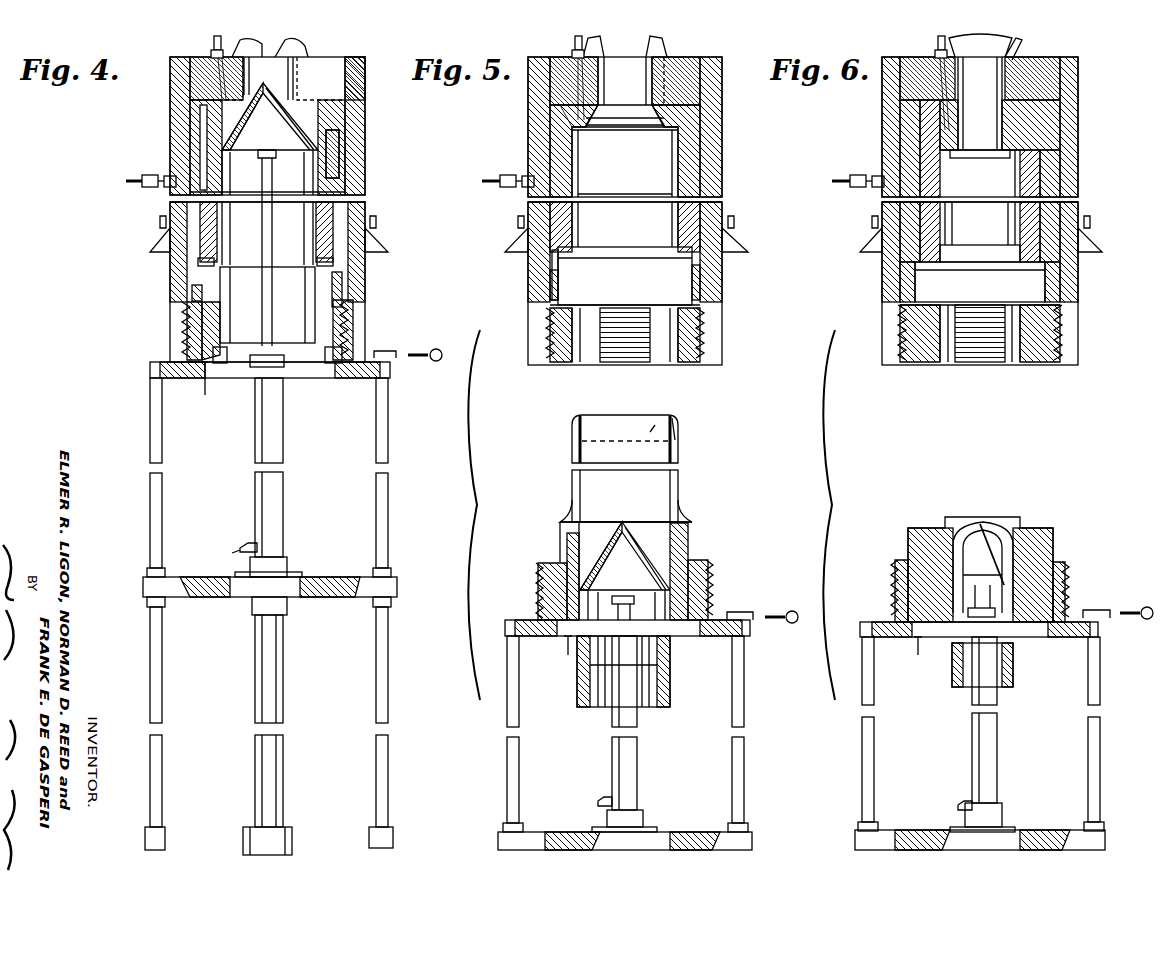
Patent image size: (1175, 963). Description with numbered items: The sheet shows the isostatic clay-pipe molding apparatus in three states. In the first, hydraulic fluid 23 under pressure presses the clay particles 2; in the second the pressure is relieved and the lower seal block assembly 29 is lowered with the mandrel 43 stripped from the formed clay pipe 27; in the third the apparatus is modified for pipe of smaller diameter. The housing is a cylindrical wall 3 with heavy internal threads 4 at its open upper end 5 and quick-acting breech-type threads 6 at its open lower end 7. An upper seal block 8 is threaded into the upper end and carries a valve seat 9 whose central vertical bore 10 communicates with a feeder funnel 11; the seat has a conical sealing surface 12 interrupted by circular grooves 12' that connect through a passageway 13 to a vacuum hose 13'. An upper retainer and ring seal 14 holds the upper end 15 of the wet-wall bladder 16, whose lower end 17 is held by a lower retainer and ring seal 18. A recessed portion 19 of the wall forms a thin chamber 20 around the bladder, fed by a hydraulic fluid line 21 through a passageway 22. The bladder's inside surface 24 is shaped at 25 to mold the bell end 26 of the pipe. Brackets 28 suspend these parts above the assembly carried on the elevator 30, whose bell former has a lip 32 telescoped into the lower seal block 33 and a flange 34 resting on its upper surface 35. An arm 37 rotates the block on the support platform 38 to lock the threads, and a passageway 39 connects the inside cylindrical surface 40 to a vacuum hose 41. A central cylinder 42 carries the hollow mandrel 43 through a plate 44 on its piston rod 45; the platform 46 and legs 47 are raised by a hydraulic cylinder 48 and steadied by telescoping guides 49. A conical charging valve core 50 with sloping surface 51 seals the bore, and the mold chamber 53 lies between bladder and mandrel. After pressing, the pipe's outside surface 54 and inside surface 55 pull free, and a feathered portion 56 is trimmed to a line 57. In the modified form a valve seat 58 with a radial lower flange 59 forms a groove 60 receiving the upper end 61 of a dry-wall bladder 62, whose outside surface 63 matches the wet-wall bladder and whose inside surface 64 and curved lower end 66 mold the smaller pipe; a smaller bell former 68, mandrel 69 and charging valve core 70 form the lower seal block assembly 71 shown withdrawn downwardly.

In FIG. 4, the clay particles 2 is at (322, 182).
In FIG. 4, the cylindrical wall 3 is at (365, 110).
In FIG. 5, the cylindrical wall 3 is at (722, 153).
In FIG. 6, the cylindrical wall 3 is at (892, 96).
In FIG. 4, the internal threads 4 is at (192, 98).
In FIG. 5, the internal threads 4 is at (550, 98).
In FIG. 6, the internal threads 4 is at (1060, 78).
In FIG. 4, the open upper end 5 is at (353, 75).
In FIG. 5, the open upper end 5 is at (700, 72).
In FIG. 6, the open upper end 5 is at (1068, 60).
In FIG. 4, the quick-acting threads 6 is at (186, 344).
In FIG. 5, the quick-acting threads 6 is at (550, 348).
In FIG. 6, the quick-acting threads 6 is at (908, 363).
In FIG. 4, the open lower end 7 is at (172, 322).
In FIG. 5, the open lower end 7 is at (722, 348).
In FIG. 6, the open lower end 7 is at (886, 349).
In FIG. 4, the upper seal block 8 is at (325, 63).
In FIG. 5, the upper seal block 8 is at (672, 62).
In FIG. 4, the valve seat 9 is at (300, 110).
In FIG. 5, the valve seat 9 is at (585, 130).
In FIG. 4, the central vertical bore 10 is at (256, 48).
In FIG. 5, the central vertical bore 10 is at (642, 58).
In FIG. 4, the feeder funnel 11 is at (298, 50).
In FIG. 5, the feeder funnel 11 is at (610, 48).
In FIG. 6, the feeder funnel 11 is at (1020, 48).
In FIG. 5, the conical sealing surface 12 is at (625, 114).
In FIG. 5, the circular grooves 12' is at (625, 148).
In FIG. 4, the passageway 13 is at (194, 68).
In FIG. 5, the passageway 13 is at (553, 78).
In FIG. 4, the vacuum hose 13' is at (205, 40).
In FIG. 5, the vacuum hose 13' is at (563, 39).
In FIG. 6, the vacuum hose 13' is at (927, 78).
In FIG. 4, the upper retainer and ring seal 14 is at (192, 113).
In FIG. 5, the upper retainer and ring seal 14 is at (700, 108).
In FIG. 6, the upper retainer and ring seal 14 is at (1060, 104).
In FIG. 4, the upper end of bladder 15 is at (345, 123).
In FIG. 5, the upper end of bladder 15 is at (552, 121).
In FIG. 5, the wet-wall bladder 16 is at (700, 180).
In FIG. 4, the lower end of bladder 17 is at (190, 290).
In FIG. 5, the lower end of bladder 17 is at (700, 284).
In FIG. 4, the lower retainer and ring seal 18 is at (340, 292).
In FIG. 5, the lower retainer and ring seal 18 is at (700, 302).
In FIG. 6, the lower retainer and ring seal 18 is at (1062, 300).
In FIG. 5, the recessed portion 19 is at (700, 136).
In FIG. 6, the recessed portion 19 is at (902, 260).
In FIG. 5, the cylindrical chamber 20 is at (552, 144).
In FIG. 6, the cylindrical chamber 20 is at (1060, 214).
In FIG. 4, the hydraulic fluid line 21 is at (134, 178).
In FIG. 5, the hydraulic fluid line 21 is at (494, 178).
In FIG. 6, the hydraulic fluid line 21 is at (836, 184).
In FIG. 4, the passageway 22 is at (176, 190).
In FIG. 5, the passageway 22 is at (538, 190).
In FIG. 6, the passageway 22 is at (892, 190).
In FIG. 4, the hydraulic fluid 23 is at (340, 160).
In FIG. 5, the inside surface of bladder 24 is at (680, 222).
In FIG. 5, the bell molding portion 25 is at (552, 266).
In FIG. 5, the bell end 26 is at (690, 517).
In FIG. 5, the clay pipe 27 is at (680, 482).
In FIG. 4, the brackets 28 is at (388, 245).
In FIG. 5, the brackets 28 is at (744, 246).
In FIG. 6, the brackets 28 is at (1100, 246).
In FIG. 4, the lower seal block assembly 29 is at (345, 348).
In FIG. 5, the lower seal block assembly 29 is at (540, 580).
In FIG. 4, the elevator 30 is at (388, 496).
In FIG. 5, the elevator 30 is at (744, 758).
In FIG. 6, the elevator 30 is at (1100, 746).
In FIG. 5, the axially directed lip 32 is at (706, 567).
In FIG. 4, the lower seal block 33 is at (345, 320).
In FIG. 5, the lower seal block 33 is at (708, 596).
In FIG. 6, the lower seal block 33 is at (1052, 581).
In FIG. 5, the downwardly directed flange 34 is at (560, 562).
In FIG. 5, the upper surface 35 is at (566, 552).
In FIG. 4, the arm 37 is at (438, 348).
In FIG. 5, the arm 37 is at (792, 609).
In FIG. 6, the arm 37 is at (1147, 606).
In FIG. 4, the support platform 38 is at (150, 372).
In FIG. 5, the support platform 38 is at (742, 628).
In FIG. 6, the support platform 38 is at (866, 628).
In FIG. 4, the passageway 39 is at (218, 378).
In FIG. 5, the passageway 39 is at (540, 600).
In FIG. 5, the inside cylindrical surface 40 is at (652, 535).
In FIG. 4, the vacuum hose 41 is at (203, 396).
In FIG. 5, the vacuum hose 41 is at (566, 652).
In FIG. 6, the vacuum hose 41 is at (917, 652).
In FIG. 4, the central cylinder 42 is at (256, 442).
In FIG. 5, the central cylinder 42 is at (614, 748).
In FIG. 6, the central cylinder 42 is at (996, 750).
In FIG. 4, the mandrel 43 is at (300, 312).
In FIG. 5, the mandrel 43 is at (688, 545).
In FIG. 4, the plate 44 is at (276, 152).
In FIG. 5, the plate 44 is at (642, 592).
In FIG. 4, the piston rod 45 is at (270, 306).
In FIG. 4, the platform 46 is at (206, 585).
In FIG. 5, the platform 46 is at (578, 835).
In FIG. 6, the platform 46 is at (928, 835).
In FIG. 4, the legs 47 is at (150, 496).
In FIG. 5, the legs 47 is at (519, 758).
In FIG. 6, the legs 47 is at (874, 746).
In FIG. 4, the hydraulic cylinder 48 is at (278, 686).
In FIG. 4, the telescoping guides 49 is at (388, 668).
In FIG. 4, the charging valve core 50 is at (270, 84).
In FIG. 5, the charging valve core 50 is at (622, 530).
In FIG. 5, the exterior sloping surface 51 is at (615, 535).
In FIG. 5, the mold chamber 53 is at (622, 240).
In FIG. 4, the outside surface of pipe 54 is at (196, 263).
In FIG. 5, the outside surface of pipe 54 is at (572, 460).
In FIG. 5, the inside surface of pipe 55 is at (586, 437).
In FIG. 5, the trimmed portion 56 is at (648, 426).
In FIG. 5, the trim line 57 is at (678, 420).
In FIG. 6, the valve seat 58 is at (1030, 76).
In FIG. 6, the radial lower flange 59 is at (1010, 160).
In FIG. 6, the circular groove 60 is at (1040, 130).
In FIG. 6, the upper end of dry-wall bladder 61 is at (905, 121).
In FIG. 6, the dry-wall bladder 62 is at (912, 150).
In FIG. 6, the outside surface of dry-wall bladder 63 is at (1050, 178).
In FIG. 6, the inside surface of dry-wall bladder 64 is at (976, 240).
In FIG. 6, the lower end of dry-wall bladder 66 is at (1062, 271).
In FIG. 6, the bell former 68 is at (1050, 534).
In FIG. 6, the mandrel 69 is at (1013, 666).
In FIG. 6, the charging valve core 70 is at (984, 522).
In FIG. 6, the lower seal block assembly 71 is at (910, 522).